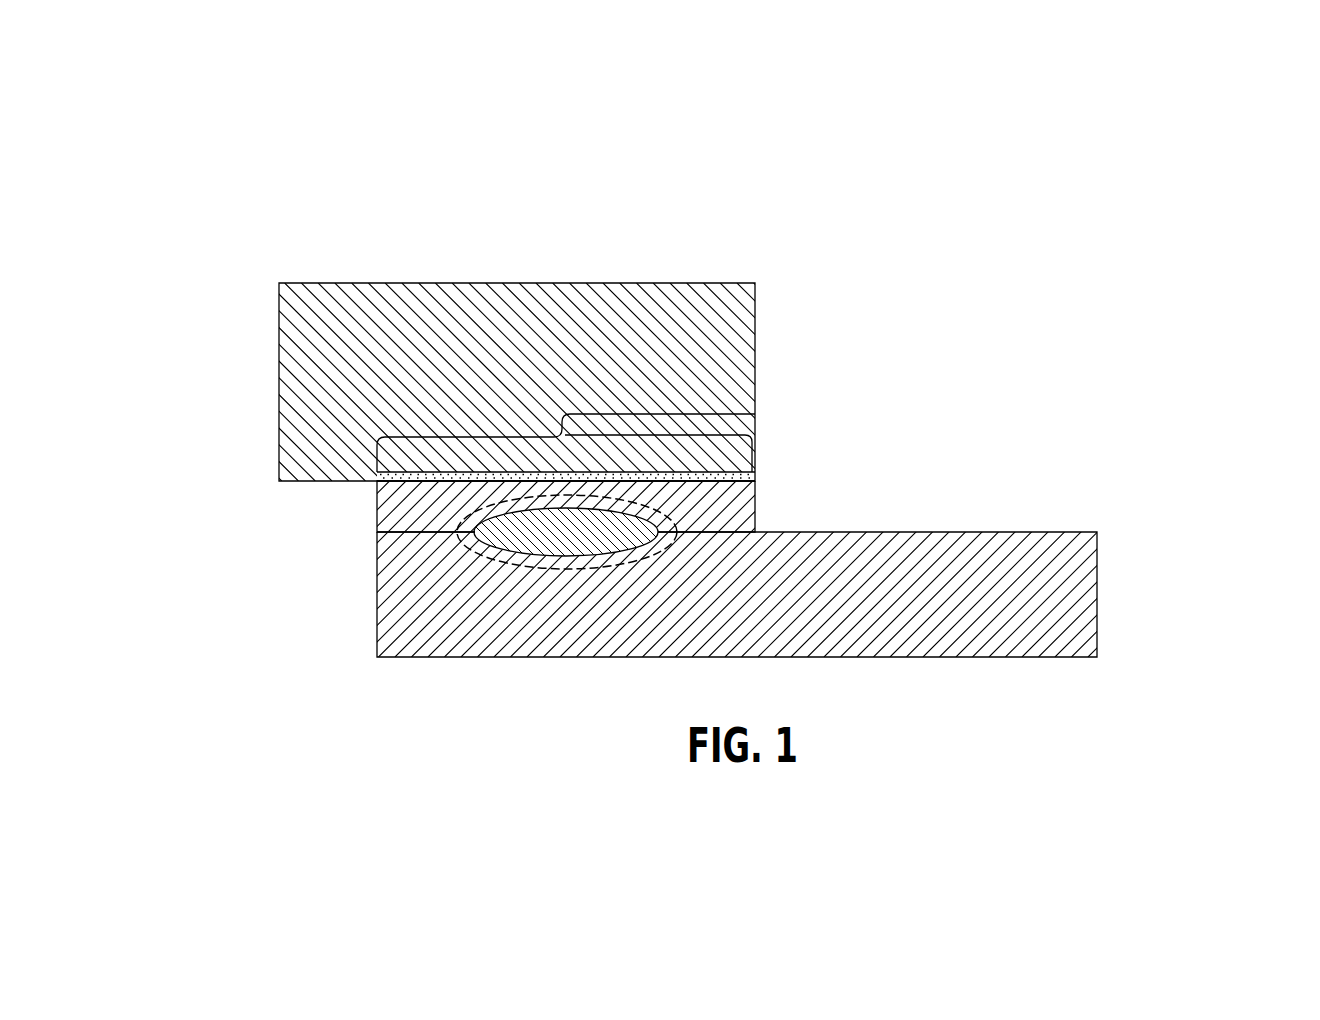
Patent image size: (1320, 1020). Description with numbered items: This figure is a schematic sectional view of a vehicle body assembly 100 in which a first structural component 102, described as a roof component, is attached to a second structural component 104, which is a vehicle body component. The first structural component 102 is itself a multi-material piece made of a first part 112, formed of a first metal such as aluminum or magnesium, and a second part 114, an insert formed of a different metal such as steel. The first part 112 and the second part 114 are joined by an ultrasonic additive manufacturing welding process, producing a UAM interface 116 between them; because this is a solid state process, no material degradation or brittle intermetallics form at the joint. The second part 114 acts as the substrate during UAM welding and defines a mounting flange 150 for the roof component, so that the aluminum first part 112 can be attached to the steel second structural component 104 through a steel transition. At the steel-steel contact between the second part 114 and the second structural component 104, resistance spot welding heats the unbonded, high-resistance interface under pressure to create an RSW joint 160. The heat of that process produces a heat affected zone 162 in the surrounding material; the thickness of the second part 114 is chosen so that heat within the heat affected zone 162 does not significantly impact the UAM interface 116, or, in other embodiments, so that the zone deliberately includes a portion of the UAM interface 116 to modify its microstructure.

The vehicle body assembly 100 is at (232, 197).
The first structural component 102 is at (755, 284).
The second structural component 104 is at (1117, 532).
The first part 112 is at (483, 320).
The second part 114 is at (722, 507).
The UAM interface 116 is at (755, 414).
The mounting flange 150 is at (418, 532).
The RSW joint 160 is at (487, 530).
The heat affected zone 162 is at (468, 548).